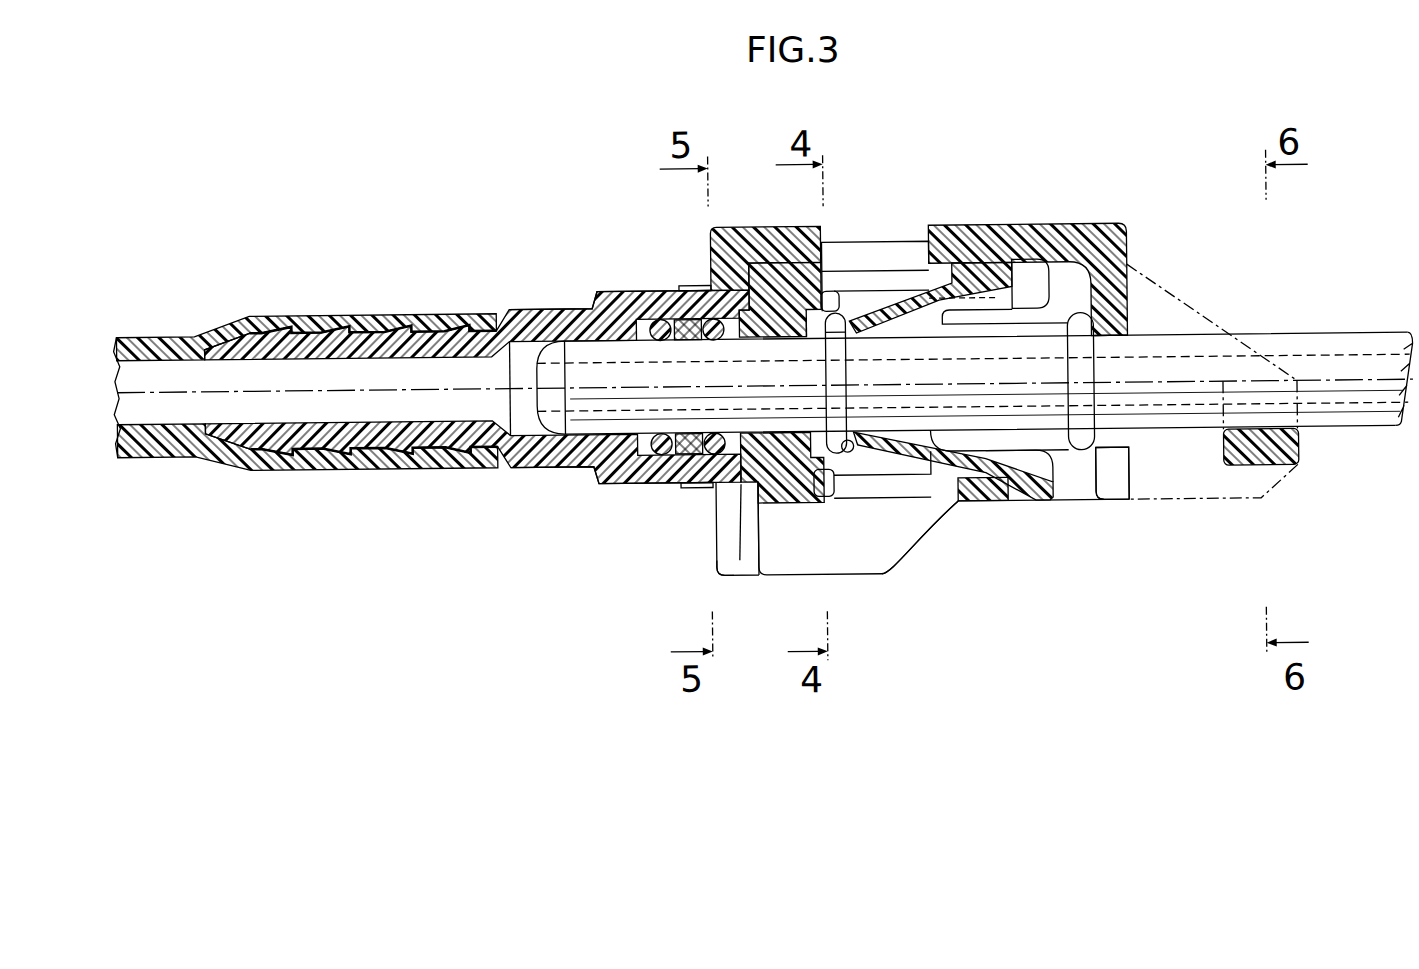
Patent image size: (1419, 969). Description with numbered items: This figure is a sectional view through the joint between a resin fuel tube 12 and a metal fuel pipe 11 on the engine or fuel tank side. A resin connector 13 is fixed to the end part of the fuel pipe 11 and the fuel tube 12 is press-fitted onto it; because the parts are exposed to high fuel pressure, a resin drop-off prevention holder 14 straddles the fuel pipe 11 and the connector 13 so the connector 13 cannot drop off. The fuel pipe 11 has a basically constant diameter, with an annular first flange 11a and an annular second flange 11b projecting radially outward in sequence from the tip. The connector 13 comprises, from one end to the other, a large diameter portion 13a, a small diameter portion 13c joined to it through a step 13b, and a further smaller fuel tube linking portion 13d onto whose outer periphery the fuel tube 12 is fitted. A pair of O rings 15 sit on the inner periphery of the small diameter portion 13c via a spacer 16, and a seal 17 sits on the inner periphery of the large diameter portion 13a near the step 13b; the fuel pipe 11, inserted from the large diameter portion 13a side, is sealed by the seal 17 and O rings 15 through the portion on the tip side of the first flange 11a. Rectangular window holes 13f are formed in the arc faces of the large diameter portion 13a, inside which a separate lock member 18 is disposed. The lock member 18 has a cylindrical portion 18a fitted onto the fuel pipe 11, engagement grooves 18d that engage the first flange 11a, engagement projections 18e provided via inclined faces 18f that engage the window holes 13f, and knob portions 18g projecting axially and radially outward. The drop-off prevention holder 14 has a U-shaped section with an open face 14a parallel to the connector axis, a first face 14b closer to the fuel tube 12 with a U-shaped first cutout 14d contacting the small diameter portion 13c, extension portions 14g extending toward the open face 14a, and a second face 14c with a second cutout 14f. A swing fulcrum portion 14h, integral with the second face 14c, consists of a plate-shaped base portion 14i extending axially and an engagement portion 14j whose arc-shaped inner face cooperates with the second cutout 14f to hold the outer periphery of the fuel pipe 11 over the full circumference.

The fuel pipe 11 is at (1314, 328).
The first flange 11a is at (843, 314).
The second flange 11b is at (1093, 334).
The fuel tube 12 is at (182, 334).
The connector 13 is at (597, 276).
The large diameter portion 13a is at (780, 263).
The step 13b is at (727, 240).
The small diameter portion 13c is at (660, 290).
The fuel tube linking portion 13d is at (348, 333).
The window hole 13f is at (832, 292).
The drop-off prevention holder 14 is at (1046, 218).
The open face 14a is at (918, 552).
The first face 14b is at (715, 506).
The second face 14c is at (1128, 453).
The first cutout 14d is at (719, 578).
The second cutout 14f is at (1115, 503).
The extension portion 14g is at (738, 560).
The swing fulcrum portion 14h is at (1210, 312).
The base portion 14i is at (1217, 508).
The engagement portion 14j is at (1293, 458).
The O ring 15 is at (653, 319).
The spacer 16 is at (688, 484).
The seal 17 is at (775, 503).
The lock member 18 is at (912, 484).
The cylindrical portion 18a is at (815, 337).
The engagement groove 18d is at (833, 323).
The engagement projection 18e is at (950, 228).
The inclined face 18f is at (897, 300).
The knob portion 18g is at (1083, 331).